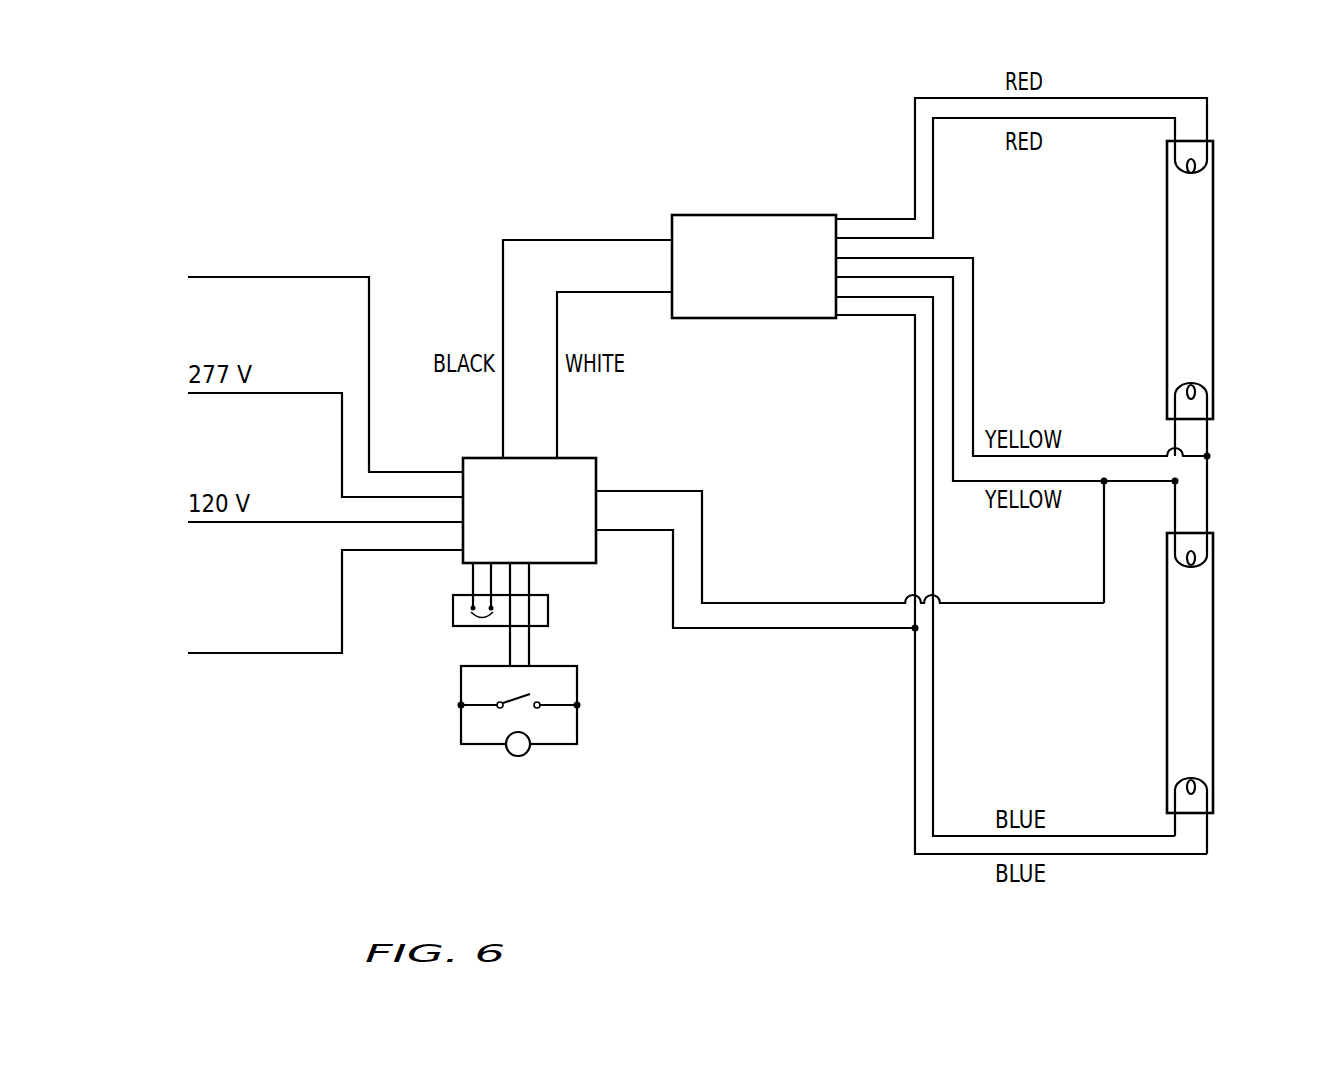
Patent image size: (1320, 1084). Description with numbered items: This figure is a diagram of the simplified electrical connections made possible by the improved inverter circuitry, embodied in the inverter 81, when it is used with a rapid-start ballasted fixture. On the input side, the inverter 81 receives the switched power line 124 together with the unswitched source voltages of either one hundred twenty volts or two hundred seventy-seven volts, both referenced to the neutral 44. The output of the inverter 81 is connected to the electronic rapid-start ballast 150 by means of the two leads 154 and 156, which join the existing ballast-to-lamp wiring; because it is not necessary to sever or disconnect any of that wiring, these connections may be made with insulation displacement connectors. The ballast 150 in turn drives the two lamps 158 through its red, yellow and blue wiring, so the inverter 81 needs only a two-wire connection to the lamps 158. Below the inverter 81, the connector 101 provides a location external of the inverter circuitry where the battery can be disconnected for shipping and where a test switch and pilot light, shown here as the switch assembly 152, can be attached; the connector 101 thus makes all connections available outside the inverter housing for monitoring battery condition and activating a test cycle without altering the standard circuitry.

The switched power line 124 is at (245, 277).
The neutral 44 is at (240, 653).
The inverter 81 is at (577, 470).
The rapid-start ballast 150 is at (752, 215).
The lead 154 is at (747, 603).
The lead 156 is at (745, 628).
The connector 101 is at (453, 609).
The test switch 152 is at (577, 682).
The lamps 158 is at (1202, 330).